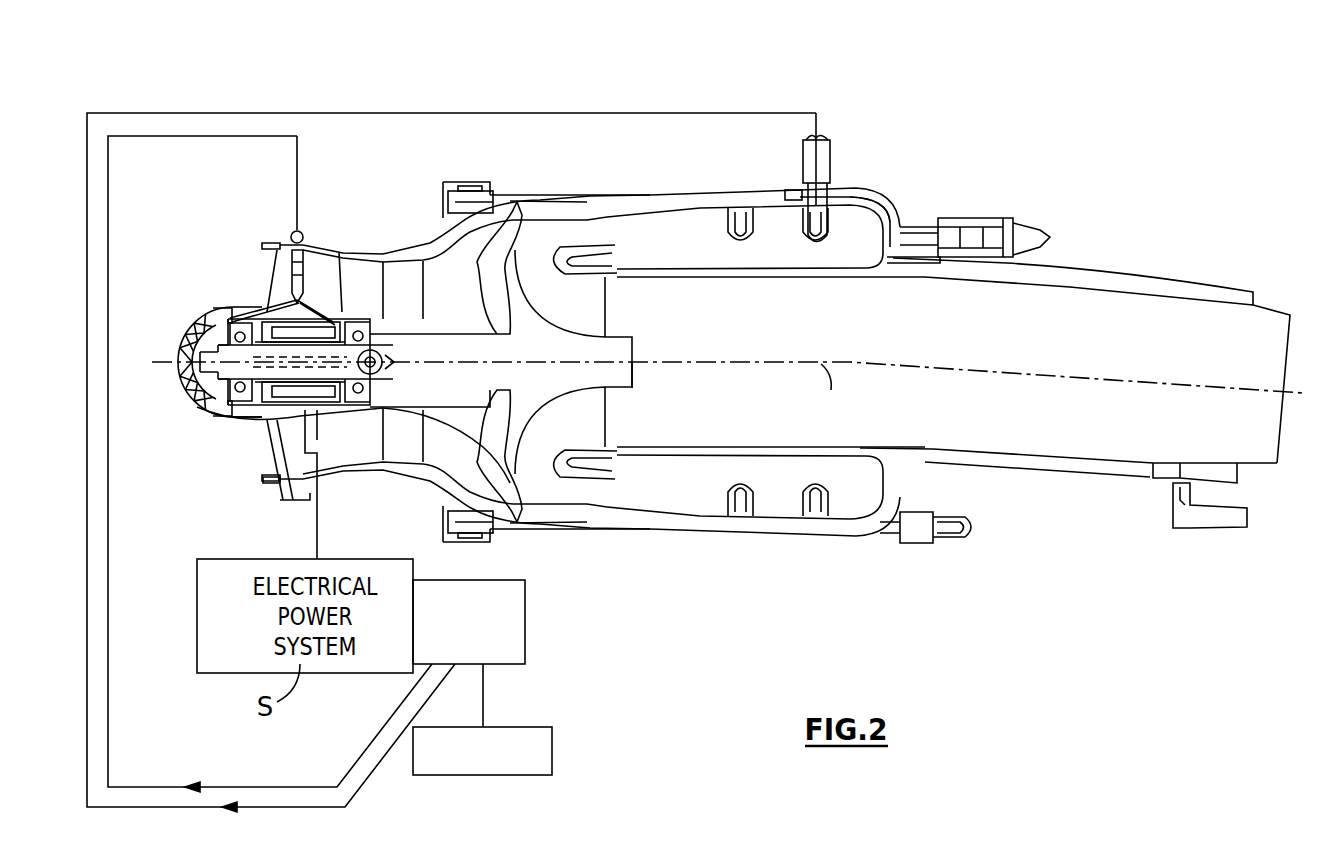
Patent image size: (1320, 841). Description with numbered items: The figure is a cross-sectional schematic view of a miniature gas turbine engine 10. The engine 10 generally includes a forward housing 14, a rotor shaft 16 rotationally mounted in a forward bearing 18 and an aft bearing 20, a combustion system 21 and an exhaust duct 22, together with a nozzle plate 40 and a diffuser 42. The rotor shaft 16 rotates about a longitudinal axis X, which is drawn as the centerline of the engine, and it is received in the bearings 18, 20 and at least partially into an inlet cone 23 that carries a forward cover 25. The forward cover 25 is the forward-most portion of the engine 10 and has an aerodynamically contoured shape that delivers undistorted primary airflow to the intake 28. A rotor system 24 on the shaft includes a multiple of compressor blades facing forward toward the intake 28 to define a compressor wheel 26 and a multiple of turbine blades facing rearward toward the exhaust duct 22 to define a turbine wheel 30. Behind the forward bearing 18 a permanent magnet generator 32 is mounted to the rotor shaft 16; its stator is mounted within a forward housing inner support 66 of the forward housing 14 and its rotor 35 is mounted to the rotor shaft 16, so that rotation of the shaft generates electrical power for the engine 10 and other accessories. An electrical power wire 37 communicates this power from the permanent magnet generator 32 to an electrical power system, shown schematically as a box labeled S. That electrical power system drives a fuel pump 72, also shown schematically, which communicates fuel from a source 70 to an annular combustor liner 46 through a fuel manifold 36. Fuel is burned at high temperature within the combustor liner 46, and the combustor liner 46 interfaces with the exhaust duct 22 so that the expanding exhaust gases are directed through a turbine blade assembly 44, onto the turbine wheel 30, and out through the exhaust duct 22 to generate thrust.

The miniature gas turbine engine 10 is at (752, 95).
The forward housing 14 is at (358, 257).
The rotor shaft 16 is at (544, 352).
The forward bearing 18 is at (240, 318).
The aft bearing 20 is at (350, 330).
The combustion system 21 is at (796, 263).
The exhaust duct 22 is at (1124, 355).
The inlet cone 23 is at (188, 313).
The rotor system 24 is at (602, 360).
The forward cover 25 is at (197, 410).
The compressor wheel 26 is at (466, 333).
The intake 28 is at (270, 282).
The turbine wheel 30 is at (591, 317).
The permanent magnet generator 32 is at (313, 327).
The rotor 35 is at (300, 402).
The fuel manifold 36 is at (833, 193).
The electrical power wire 37 is at (317, 520).
The nozzle plate 40 is at (516, 232).
The diffuser 42 is at (543, 210).
The turbine blade assembly 44 is at (600, 233).
The annular combustor liner 46 is at (870, 210).
The forward housing inner support 66 is at (240, 413).
The source 70 is at (552, 753).
The fuel pump 72 is at (525, 630).